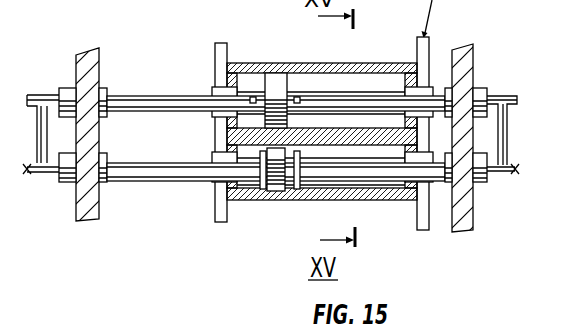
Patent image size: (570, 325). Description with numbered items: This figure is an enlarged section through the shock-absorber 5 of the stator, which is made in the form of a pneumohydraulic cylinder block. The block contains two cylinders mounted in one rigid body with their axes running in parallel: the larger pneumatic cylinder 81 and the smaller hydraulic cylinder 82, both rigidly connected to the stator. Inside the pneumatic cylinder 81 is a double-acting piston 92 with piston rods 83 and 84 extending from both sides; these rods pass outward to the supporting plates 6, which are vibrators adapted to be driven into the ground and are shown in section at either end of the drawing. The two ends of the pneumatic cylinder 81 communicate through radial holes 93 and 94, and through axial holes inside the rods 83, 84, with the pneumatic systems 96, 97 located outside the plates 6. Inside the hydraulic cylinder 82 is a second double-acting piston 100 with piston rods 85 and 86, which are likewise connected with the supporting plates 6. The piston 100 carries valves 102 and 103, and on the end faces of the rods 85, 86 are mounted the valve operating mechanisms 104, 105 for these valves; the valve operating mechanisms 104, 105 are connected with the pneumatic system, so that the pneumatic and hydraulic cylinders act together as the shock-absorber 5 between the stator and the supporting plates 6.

The shock-absorber 5 is at (403, 200).
The supporting plates 6 is at (78, 200).
The pneumatic cylinder 81 is at (385, 63).
The hydraulic cylinder 82 is at (380, 200).
The piston rod 83 is at (166, 96).
The piston rod 84 is at (440, 97).
The piston rod 85 is at (176, 167).
The piston rod 86 is at (440, 185).
The double-acting piston 92 is at (276, 80).
The radial hole 93 is at (251, 92).
The radial hole 94 is at (298, 92).
The pneumatic system 96 is at (42, 95).
The pneumatic system 97 is at (500, 96).
The double-acting piston 100 is at (276, 190).
The valve 102 is at (262, 190).
The valve 103 is at (298, 190).
The valve operating mechanism 104 is at (27, 174).
The valve operating mechanism 105 is at (514, 174).